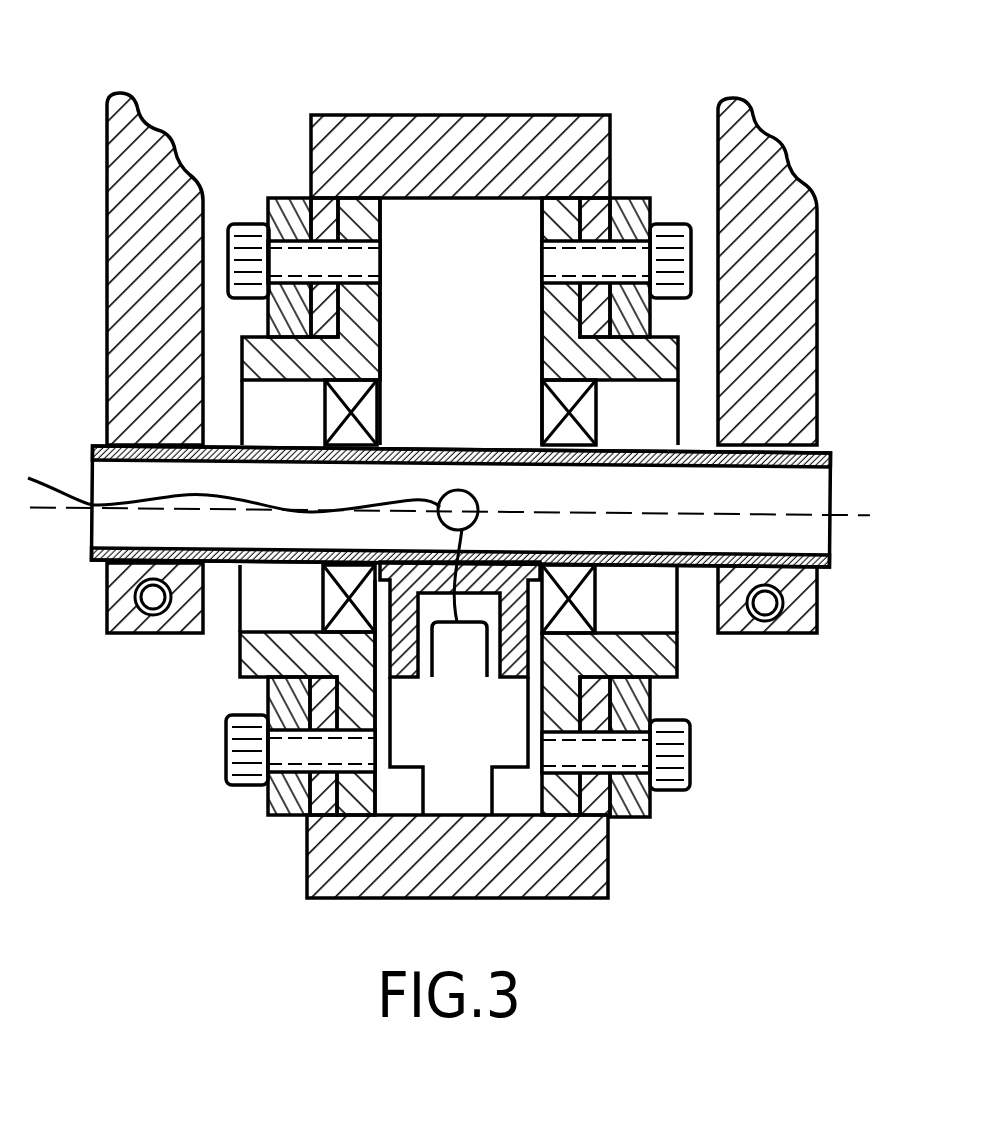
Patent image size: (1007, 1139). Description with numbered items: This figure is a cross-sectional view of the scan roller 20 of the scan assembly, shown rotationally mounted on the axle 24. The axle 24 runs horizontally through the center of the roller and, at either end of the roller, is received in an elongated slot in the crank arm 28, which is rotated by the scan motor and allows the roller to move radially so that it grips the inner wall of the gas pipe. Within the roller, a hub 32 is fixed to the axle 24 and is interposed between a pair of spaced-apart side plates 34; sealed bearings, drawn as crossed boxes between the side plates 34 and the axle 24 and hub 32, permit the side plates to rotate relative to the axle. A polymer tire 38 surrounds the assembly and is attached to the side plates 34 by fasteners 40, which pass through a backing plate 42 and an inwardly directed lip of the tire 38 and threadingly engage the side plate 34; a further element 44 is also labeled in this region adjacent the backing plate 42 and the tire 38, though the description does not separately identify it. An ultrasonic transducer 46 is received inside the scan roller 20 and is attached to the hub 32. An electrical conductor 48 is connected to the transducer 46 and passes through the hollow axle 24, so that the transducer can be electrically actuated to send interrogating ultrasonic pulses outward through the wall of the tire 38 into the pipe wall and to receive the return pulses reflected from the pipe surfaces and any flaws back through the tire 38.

The scan roller 20 is at (433, 92).
The axle 24 is at (773, 470).
The crank arm 28 is at (783, 283).
The hub 32 is at (513, 653).
The side plates 34 is at (268, 650).
The polymer tire 38 is at (363, 135).
The fasteners 40 is at (673, 227).
The backing plate 42 is at (627, 218).
The spacer 44 is at (597, 222).
The ultrasonic transducer 46 is at (460, 752).
The electrical conductor 48 is at (58, 497).